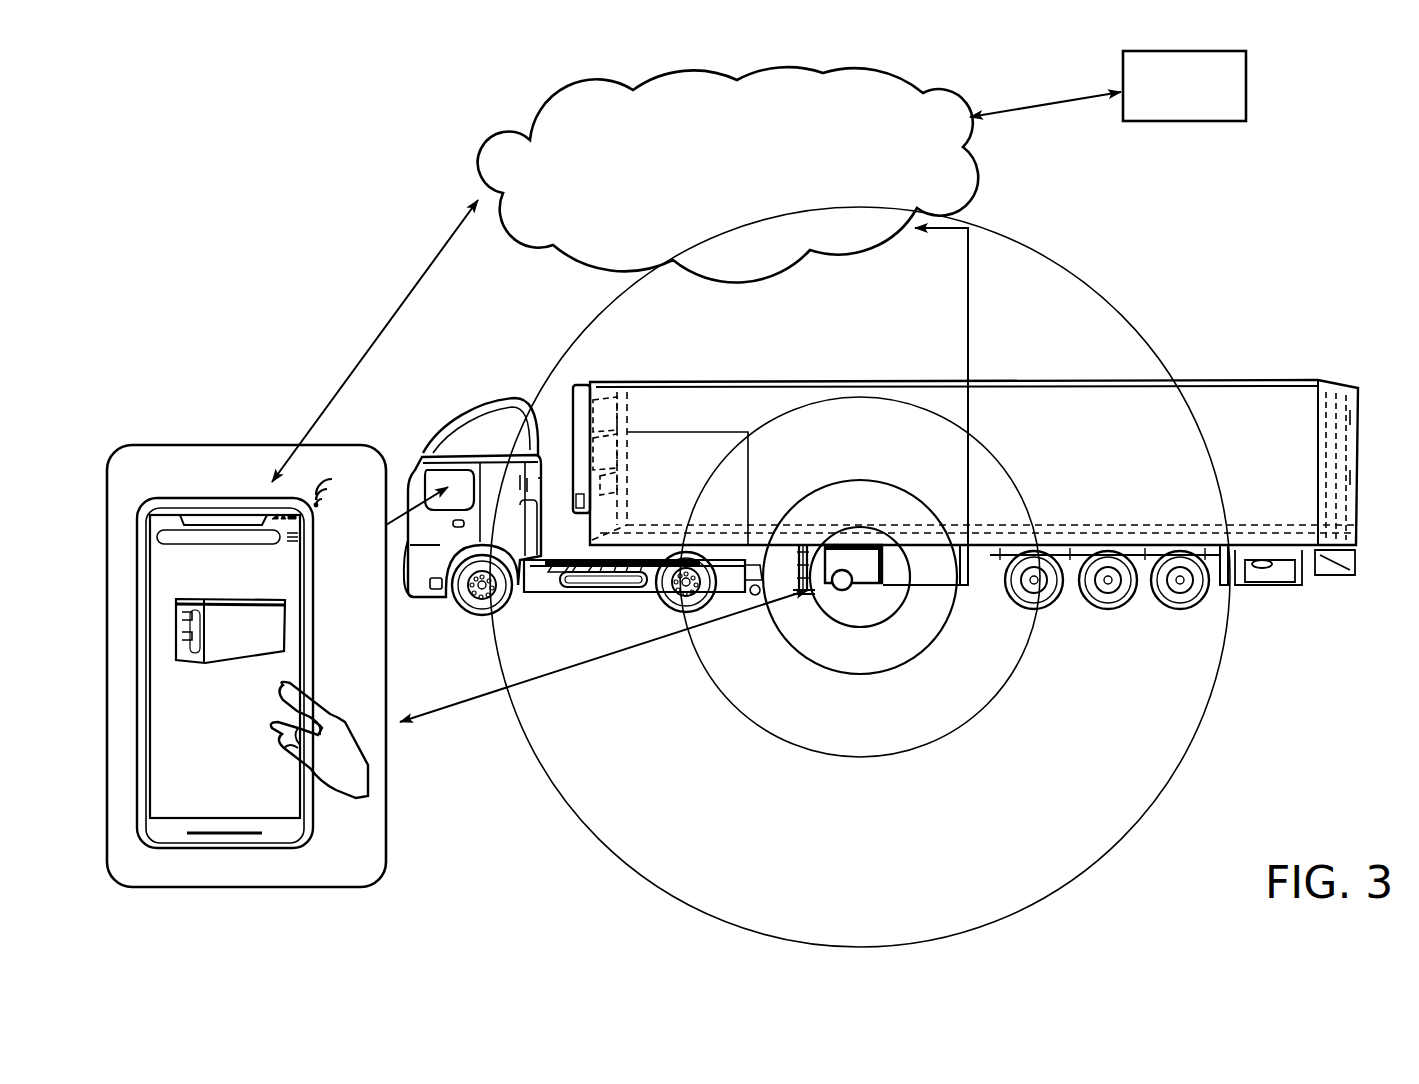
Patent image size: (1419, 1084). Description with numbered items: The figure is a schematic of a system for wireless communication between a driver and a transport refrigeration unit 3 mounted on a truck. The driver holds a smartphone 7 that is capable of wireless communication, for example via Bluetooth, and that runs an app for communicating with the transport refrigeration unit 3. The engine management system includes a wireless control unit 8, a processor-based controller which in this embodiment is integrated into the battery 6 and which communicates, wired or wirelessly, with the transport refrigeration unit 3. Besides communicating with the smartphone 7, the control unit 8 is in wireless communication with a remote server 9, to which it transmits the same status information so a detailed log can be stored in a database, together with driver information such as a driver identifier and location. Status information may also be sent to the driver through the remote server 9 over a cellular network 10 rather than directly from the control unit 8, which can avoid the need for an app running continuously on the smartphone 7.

The transport refrigeration unit 3 is at (585, 392).
The battery 6 is at (856, 583).
The smartphone 7 is at (222, 497).
The wireless control unit 8 is at (833, 592).
The remote server 9 is at (1184, 86).
The cellular network 10 is at (728, 174).